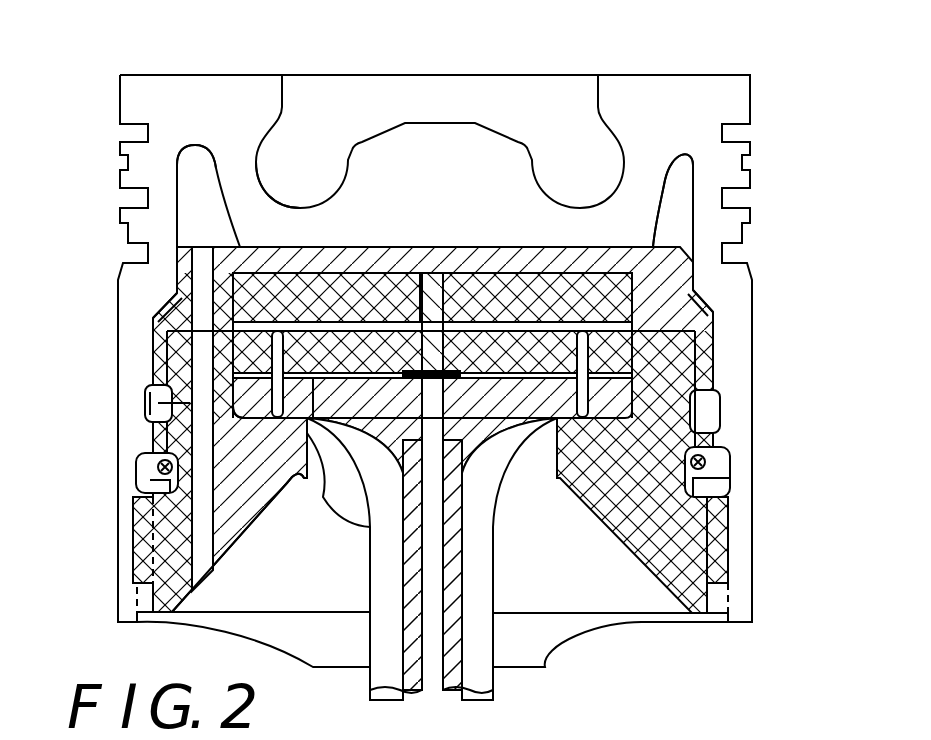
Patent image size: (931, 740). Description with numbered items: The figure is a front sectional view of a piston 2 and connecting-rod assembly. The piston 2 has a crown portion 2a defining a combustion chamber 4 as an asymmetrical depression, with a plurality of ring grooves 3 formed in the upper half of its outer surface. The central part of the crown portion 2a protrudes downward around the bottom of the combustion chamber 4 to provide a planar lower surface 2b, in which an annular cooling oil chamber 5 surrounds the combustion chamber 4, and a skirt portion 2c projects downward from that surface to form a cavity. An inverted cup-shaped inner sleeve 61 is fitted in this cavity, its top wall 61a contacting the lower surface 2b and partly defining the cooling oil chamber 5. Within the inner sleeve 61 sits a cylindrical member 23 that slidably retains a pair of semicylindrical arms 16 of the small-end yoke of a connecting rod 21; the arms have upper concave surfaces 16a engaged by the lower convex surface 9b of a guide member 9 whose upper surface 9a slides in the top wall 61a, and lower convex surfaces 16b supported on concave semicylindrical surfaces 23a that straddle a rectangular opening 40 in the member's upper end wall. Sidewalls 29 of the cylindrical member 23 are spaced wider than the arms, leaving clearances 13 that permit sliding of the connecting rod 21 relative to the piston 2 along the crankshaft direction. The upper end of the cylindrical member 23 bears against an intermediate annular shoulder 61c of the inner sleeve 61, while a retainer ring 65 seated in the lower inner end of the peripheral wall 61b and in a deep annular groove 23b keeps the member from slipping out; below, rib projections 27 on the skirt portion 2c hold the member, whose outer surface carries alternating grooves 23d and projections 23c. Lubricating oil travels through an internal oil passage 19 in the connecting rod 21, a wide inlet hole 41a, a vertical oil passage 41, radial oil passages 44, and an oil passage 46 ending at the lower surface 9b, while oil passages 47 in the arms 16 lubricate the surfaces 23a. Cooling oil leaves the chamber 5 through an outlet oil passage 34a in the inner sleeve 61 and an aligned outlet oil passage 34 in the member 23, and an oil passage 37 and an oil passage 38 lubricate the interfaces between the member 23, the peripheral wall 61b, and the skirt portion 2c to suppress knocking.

The piston 2 is at (211, 60).
The crown portion 2a is at (440, 166).
The lower surface 2b is at (478, 258).
The skirt portion 2c is at (738, 378).
The ring grooves 3 is at (137, 200).
The combustion chamber 4 is at (256, 162).
The annular cooling oil chamber 5 is at (206, 189).
The guide member 9 is at (588, 314).
The upper surface 9a is at (542, 268).
The lower convex surface 9b is at (432, 352).
The clearances 13 is at (633, 393).
The arms 16 is at (553, 415).
The upper concave surfaces 16a is at (376, 378).
The lower convex surfaces 16b is at (593, 420).
The internal oil passage 19 is at (410, 567).
The connecting rod 21 is at (373, 685).
The cylindrical member 23 is at (177, 338).
The concave semicylindrical surfaces 23a is at (217, 407).
The annular groove 23b is at (723, 480).
The projections 23c is at (720, 527).
The grooves 23d is at (727, 568).
The rib projections 27 is at (700, 603).
The sidewalls 29 is at (630, 345).
The outlet oil passage 34 is at (203, 562).
The outlet oil passage 34a is at (207, 246).
The oil passage 37 is at (173, 403).
The oil passage 38 is at (150, 413).
The rectangular opening 40 is at (313, 490).
The vertical oil passage 41 is at (432, 306).
The inlet hole 41a is at (488, 378).
The oil passages 44 is at (300, 320).
The oil passage 46 is at (275, 352).
The oil passages 47 is at (275, 397).
The inner sleeve 61 is at (431, 235).
The top wall 61a is at (603, 262).
The peripheral wall 61b is at (160, 363).
The intermediate annular shoulder 61c is at (695, 352).
The retainer ring 65 is at (691, 466).